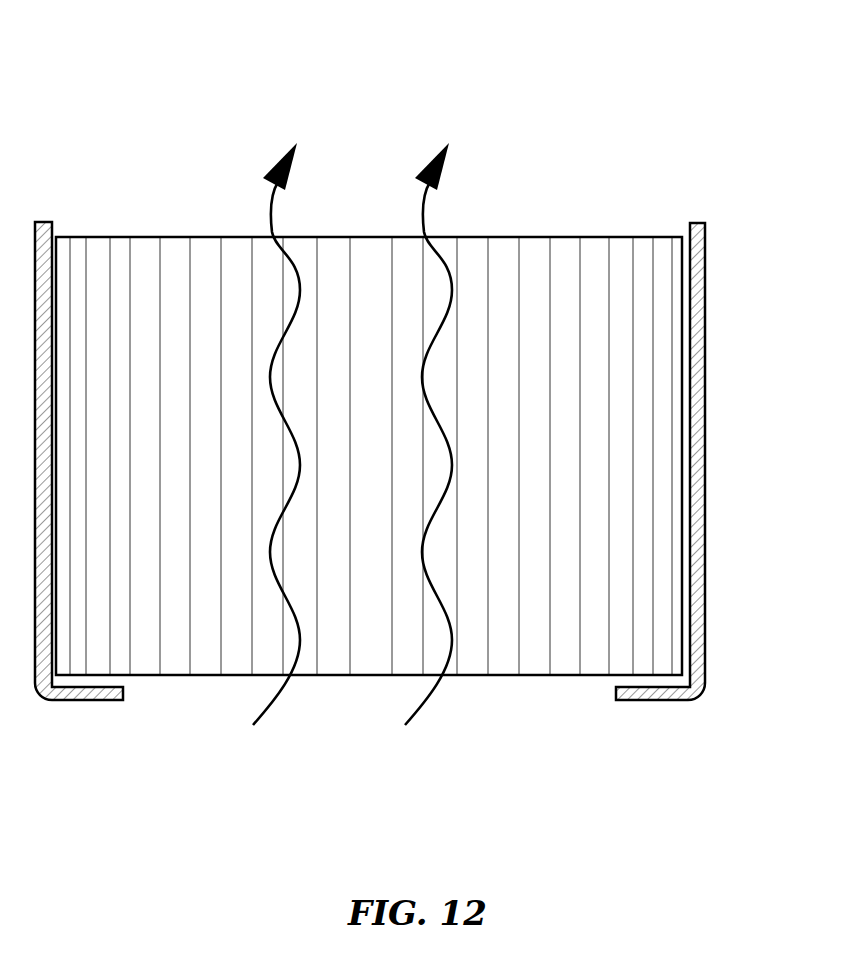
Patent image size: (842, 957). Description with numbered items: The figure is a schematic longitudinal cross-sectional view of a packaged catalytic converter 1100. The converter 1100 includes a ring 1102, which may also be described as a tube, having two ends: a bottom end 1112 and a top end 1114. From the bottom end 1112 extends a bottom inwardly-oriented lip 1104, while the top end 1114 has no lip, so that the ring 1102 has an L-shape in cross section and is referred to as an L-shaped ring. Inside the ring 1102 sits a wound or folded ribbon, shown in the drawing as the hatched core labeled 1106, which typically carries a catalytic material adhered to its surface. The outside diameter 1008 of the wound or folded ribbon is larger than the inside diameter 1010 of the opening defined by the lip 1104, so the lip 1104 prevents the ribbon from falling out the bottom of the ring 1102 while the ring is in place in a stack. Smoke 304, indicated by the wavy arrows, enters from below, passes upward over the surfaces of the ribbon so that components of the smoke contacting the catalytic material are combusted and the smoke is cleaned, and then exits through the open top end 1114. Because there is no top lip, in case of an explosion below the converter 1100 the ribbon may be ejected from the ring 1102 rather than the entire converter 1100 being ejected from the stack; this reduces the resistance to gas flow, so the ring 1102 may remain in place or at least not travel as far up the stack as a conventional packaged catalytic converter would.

The packaged catalytic converter 1100 is at (582, 62).
The ring 1102 is at (706, 308).
The bottom inwardly-oriented lip 1104 is at (60, 703).
The fin core 1106 is at (345, 237).
The smoke 304 is at (447, 468).
The top end 1114 is at (720, 218).
The bottom end 1112 is at (716, 692).
The outside diameter 1008 is at (682, 225).
The inside diameter 1010 is at (617, 803).